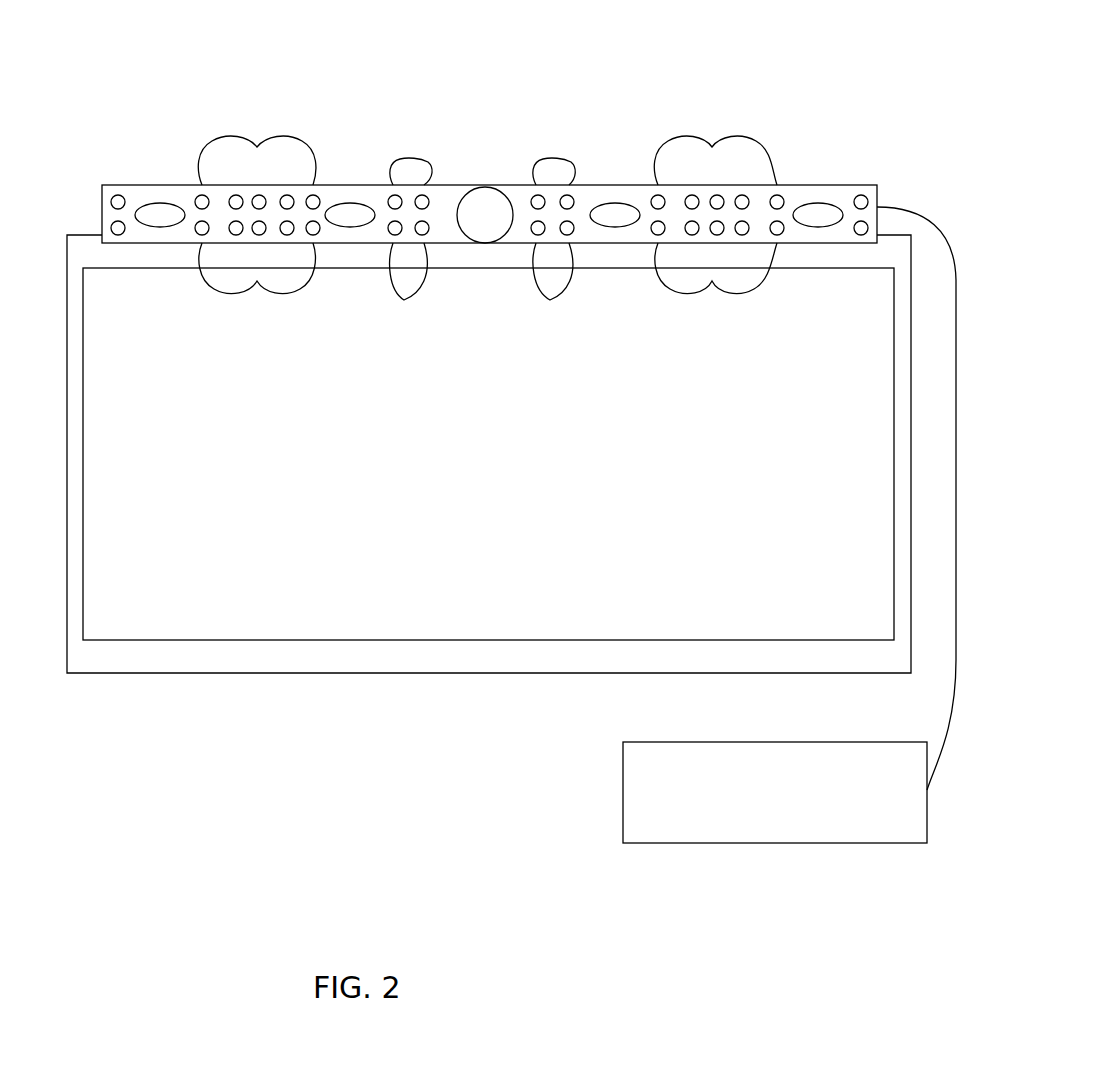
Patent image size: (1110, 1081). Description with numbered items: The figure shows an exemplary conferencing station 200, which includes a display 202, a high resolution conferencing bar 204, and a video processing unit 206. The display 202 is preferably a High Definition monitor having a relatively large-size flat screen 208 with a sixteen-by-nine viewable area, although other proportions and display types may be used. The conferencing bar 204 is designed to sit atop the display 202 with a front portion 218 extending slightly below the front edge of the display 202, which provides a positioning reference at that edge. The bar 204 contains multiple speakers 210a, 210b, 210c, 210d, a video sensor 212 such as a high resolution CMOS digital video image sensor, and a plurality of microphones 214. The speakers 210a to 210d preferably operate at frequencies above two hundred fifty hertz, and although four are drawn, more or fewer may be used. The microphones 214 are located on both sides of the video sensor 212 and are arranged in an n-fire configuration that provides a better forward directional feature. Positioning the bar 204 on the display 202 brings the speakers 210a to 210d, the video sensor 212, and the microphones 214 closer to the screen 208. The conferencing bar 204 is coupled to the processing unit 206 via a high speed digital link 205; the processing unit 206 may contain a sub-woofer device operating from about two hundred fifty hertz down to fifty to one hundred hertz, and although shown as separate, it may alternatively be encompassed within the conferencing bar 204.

The conferencing station 200 is at (281, 851).
The display 202 is at (118, 674).
The high resolution conferencing bar 204 is at (337, 185).
The high speed digital link 205 is at (925, 213).
The video processing unit 206 is at (775, 792).
The screen 208 is at (488, 454).
The speaker 210a is at (163, 202).
The speaker 210b is at (356, 202).
The speaker 210c is at (631, 202).
The speaker 210d is at (828, 202).
The video sensor 212 is at (502, 185).
The microphones 214 is at (112, 228).
The front portion 218 is at (110, 233).